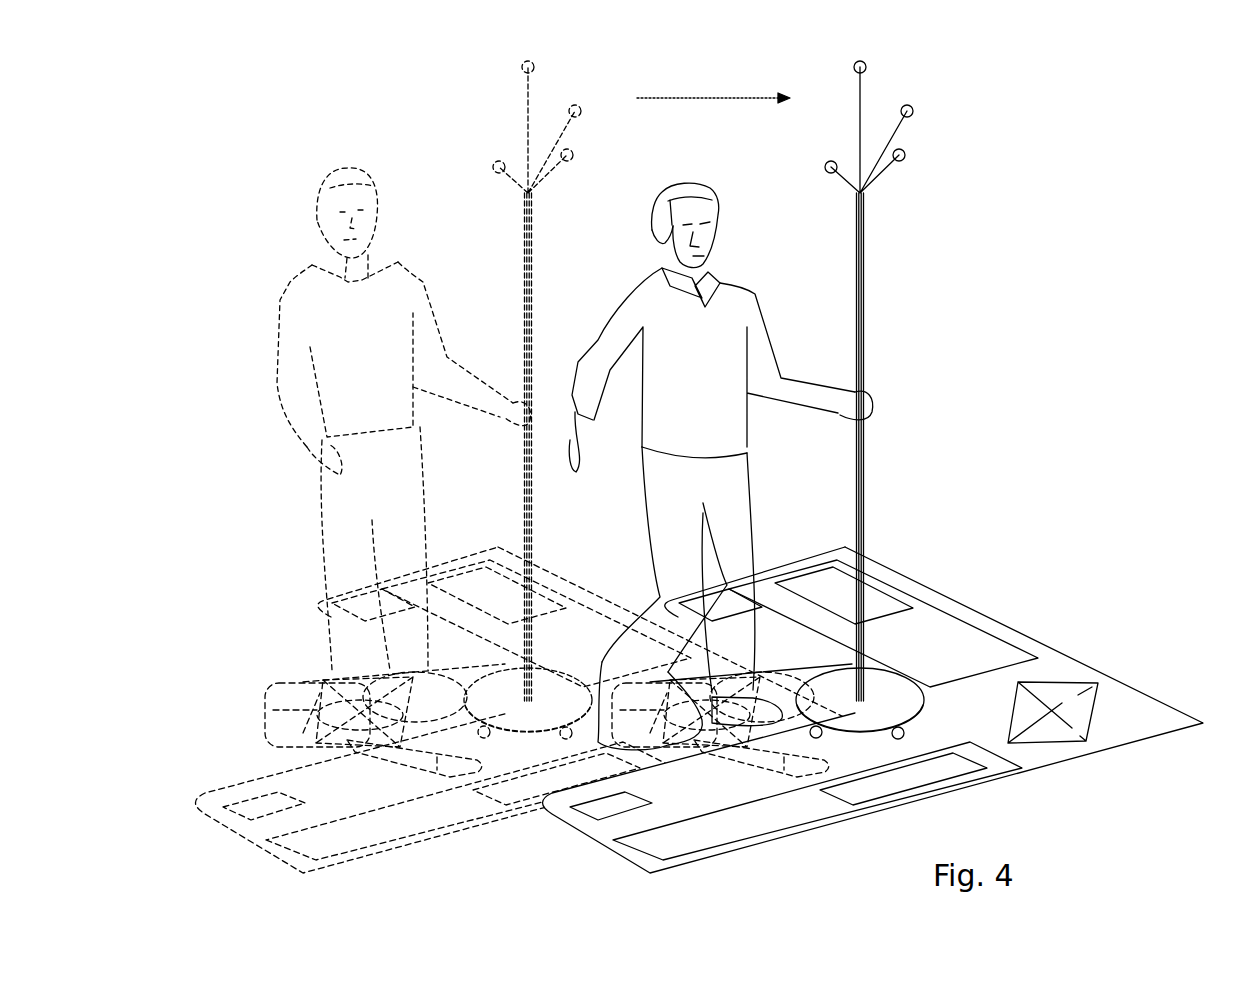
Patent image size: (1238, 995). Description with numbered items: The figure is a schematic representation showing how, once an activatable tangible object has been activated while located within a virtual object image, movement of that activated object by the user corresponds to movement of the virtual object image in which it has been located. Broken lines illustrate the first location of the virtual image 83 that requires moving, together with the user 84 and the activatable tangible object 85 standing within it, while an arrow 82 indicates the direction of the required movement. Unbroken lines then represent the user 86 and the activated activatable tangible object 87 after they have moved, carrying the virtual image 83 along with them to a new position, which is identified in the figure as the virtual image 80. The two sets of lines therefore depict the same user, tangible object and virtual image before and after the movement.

The virtual image 80 is at (1060, 668).
The arrow 82 is at (703, 92).
The virtual image 83 is at (253, 803).
The user 84 is at (303, 293).
The activatable tangible object 85 is at (534, 248).
The user 86 is at (688, 193).
The activated activatable tangible object 87 is at (863, 258).